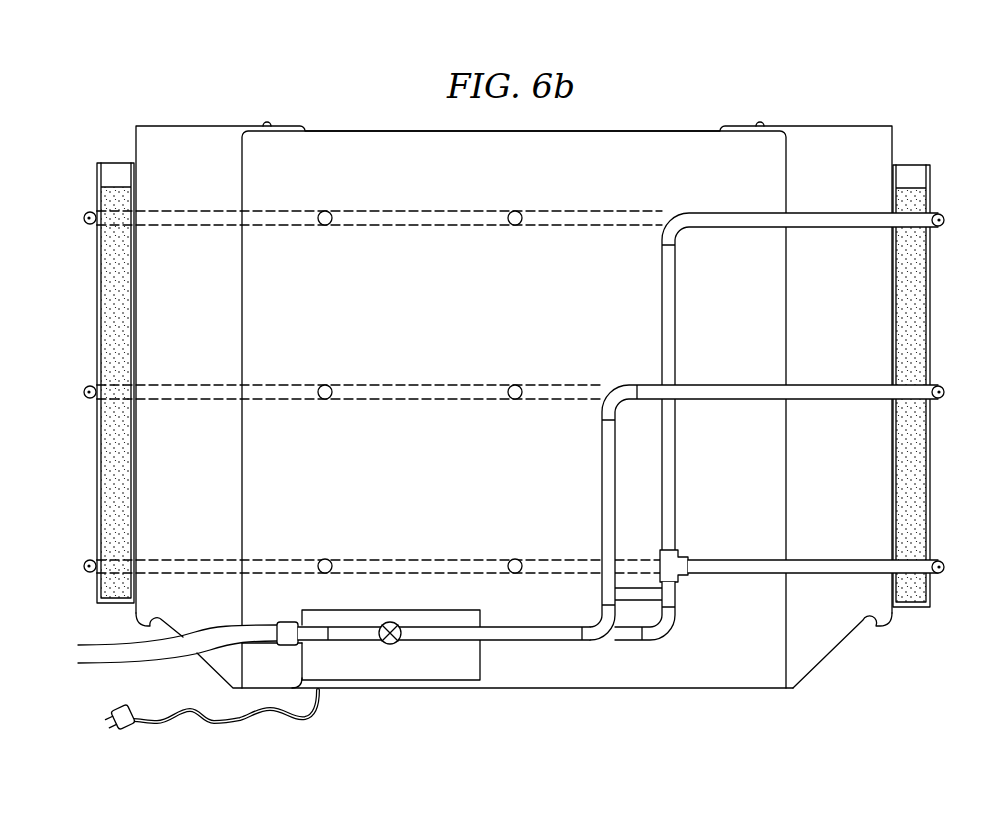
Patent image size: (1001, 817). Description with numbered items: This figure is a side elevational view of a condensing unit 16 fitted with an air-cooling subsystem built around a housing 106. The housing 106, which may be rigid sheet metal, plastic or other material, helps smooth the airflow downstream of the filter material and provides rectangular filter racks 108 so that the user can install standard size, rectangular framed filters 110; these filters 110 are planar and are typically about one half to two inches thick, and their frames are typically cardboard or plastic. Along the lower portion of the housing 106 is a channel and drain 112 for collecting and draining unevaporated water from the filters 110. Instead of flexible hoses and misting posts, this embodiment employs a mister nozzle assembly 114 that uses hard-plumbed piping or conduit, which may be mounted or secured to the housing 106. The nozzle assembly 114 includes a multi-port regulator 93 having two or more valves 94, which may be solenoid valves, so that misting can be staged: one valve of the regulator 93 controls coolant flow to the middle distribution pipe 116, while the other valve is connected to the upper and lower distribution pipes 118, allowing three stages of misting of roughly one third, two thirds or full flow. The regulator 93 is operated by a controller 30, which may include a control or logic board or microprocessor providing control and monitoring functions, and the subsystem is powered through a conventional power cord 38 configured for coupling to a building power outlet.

The condensing unit 16 is at (341, 104).
The controller 30 is at (481, 660).
The power cord 38 is at (216, 724).
The multi-port regulator 93 is at (541, 627).
The valve 94 is at (395, 622).
The housing 106 is at (830, 126).
The filter rack 108 is at (113, 163).
The framed filter 110 is at (907, 257).
The channel and drain 112 is at (862, 618).
The mister nozzle assembly 114 is at (835, 560).
The middle distribution pipe 116 is at (835, 385).
The upper and lower distribution pipes 118 is at (835, 212).